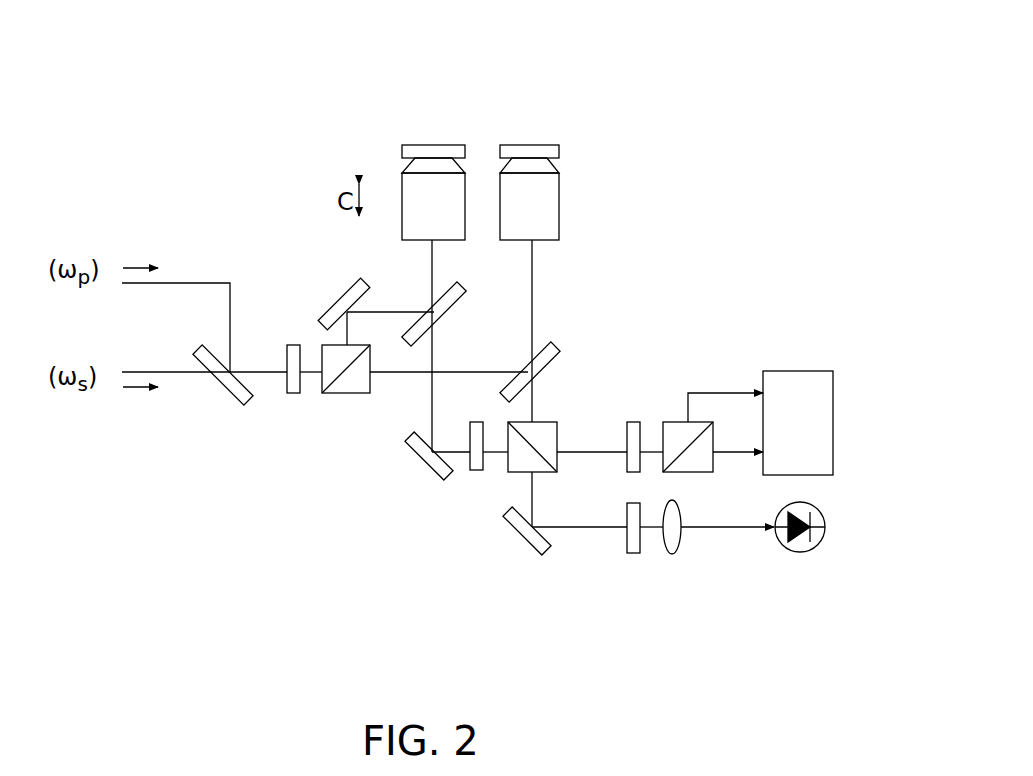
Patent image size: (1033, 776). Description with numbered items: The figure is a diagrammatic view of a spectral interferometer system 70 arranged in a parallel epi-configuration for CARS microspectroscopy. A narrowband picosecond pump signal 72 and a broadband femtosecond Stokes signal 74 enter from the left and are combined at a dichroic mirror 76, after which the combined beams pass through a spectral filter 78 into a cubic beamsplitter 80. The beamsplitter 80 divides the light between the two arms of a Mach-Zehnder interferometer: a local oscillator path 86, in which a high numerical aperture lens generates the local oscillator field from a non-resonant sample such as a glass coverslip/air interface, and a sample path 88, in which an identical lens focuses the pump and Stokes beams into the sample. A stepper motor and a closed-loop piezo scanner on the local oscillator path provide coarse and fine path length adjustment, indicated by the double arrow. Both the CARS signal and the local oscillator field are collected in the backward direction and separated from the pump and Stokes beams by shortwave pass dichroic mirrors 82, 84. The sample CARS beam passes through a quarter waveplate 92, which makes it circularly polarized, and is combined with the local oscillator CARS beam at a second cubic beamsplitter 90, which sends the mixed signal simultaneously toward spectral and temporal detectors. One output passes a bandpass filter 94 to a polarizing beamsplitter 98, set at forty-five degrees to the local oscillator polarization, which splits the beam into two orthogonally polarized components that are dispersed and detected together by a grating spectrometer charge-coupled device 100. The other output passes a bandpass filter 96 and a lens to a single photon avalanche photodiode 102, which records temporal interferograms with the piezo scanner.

The system 70 is at (855, 55).
The pump signal 72 is at (186, 282).
The Stokes signal 74 is at (175, 374).
The dichroic mirror 76 is at (230, 397).
The spectral filter 78 is at (295, 344).
The cubic beamsplitter 80 is at (348, 395).
The shortwave pass dichroic mirror 82 is at (452, 313).
The shortwave pass dichroic mirror 84 is at (545, 368).
The local oscillator path 86 is at (433, 144).
The sample path 88 is at (528, 144).
The cubic beamsplitter 90 is at (557, 470).
The quarter waveplate 92 is at (477, 472).
The bandpass filter 94 is at (634, 421).
The bandpass filter 96 is at (633, 553).
The polarizing beamsplitter 98 is at (713, 472).
The grating spectrometer charge-coupled device 100 is at (835, 400).
The single photon avalanche photodiode 102 is at (823, 545).